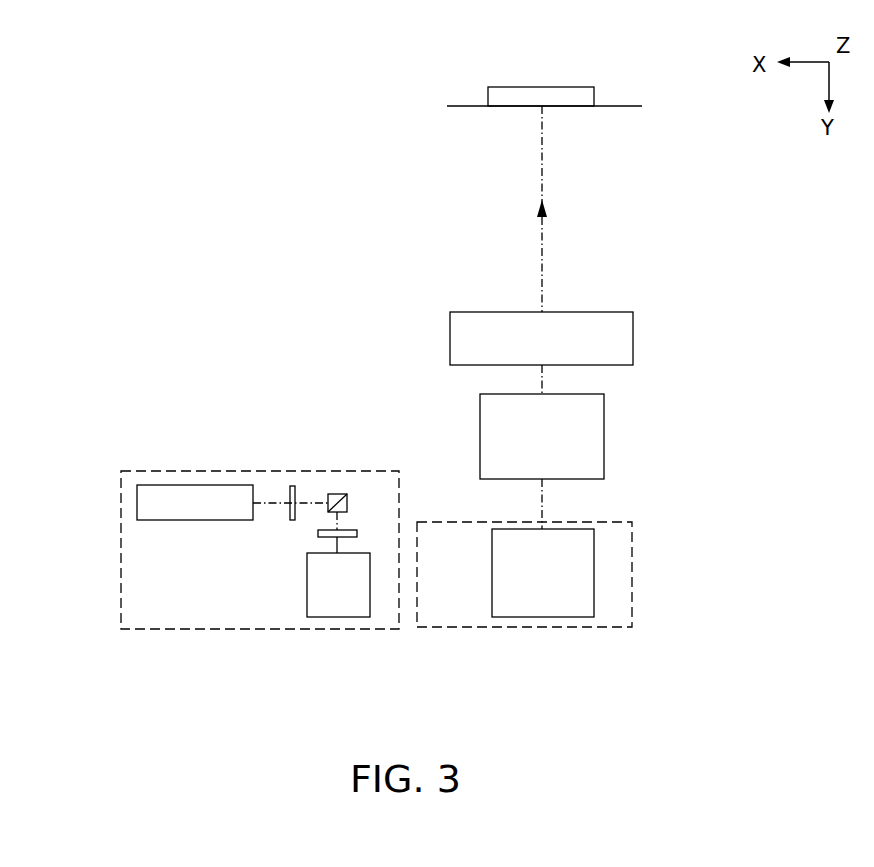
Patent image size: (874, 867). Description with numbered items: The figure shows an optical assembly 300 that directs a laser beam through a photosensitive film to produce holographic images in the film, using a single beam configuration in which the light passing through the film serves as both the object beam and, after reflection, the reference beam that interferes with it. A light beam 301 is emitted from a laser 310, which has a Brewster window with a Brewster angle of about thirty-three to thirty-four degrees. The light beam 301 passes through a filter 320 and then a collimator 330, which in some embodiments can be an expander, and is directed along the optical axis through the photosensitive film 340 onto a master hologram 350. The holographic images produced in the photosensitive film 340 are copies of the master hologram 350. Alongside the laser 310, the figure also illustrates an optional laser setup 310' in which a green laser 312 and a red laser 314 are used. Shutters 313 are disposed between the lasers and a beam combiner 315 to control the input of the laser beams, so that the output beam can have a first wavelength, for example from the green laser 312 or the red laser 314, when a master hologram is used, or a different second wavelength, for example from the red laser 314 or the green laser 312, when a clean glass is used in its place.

The optical assembly 300 is at (748, 228).
The light beam 301 is at (542, 241).
The laser 310 is at (562, 574).
The laser setup 310' is at (219, 550).
The green laser 312 is at (196, 485).
The shutters 313 is at (312, 538).
The red laser 314 is at (345, 617).
The beam combiner 315 is at (332, 488).
The filter 320 is at (604, 435).
The collimator 330 is at (633, 337).
The photosensitive film 340 is at (621, 112).
The master hologram 350 is at (489, 81).